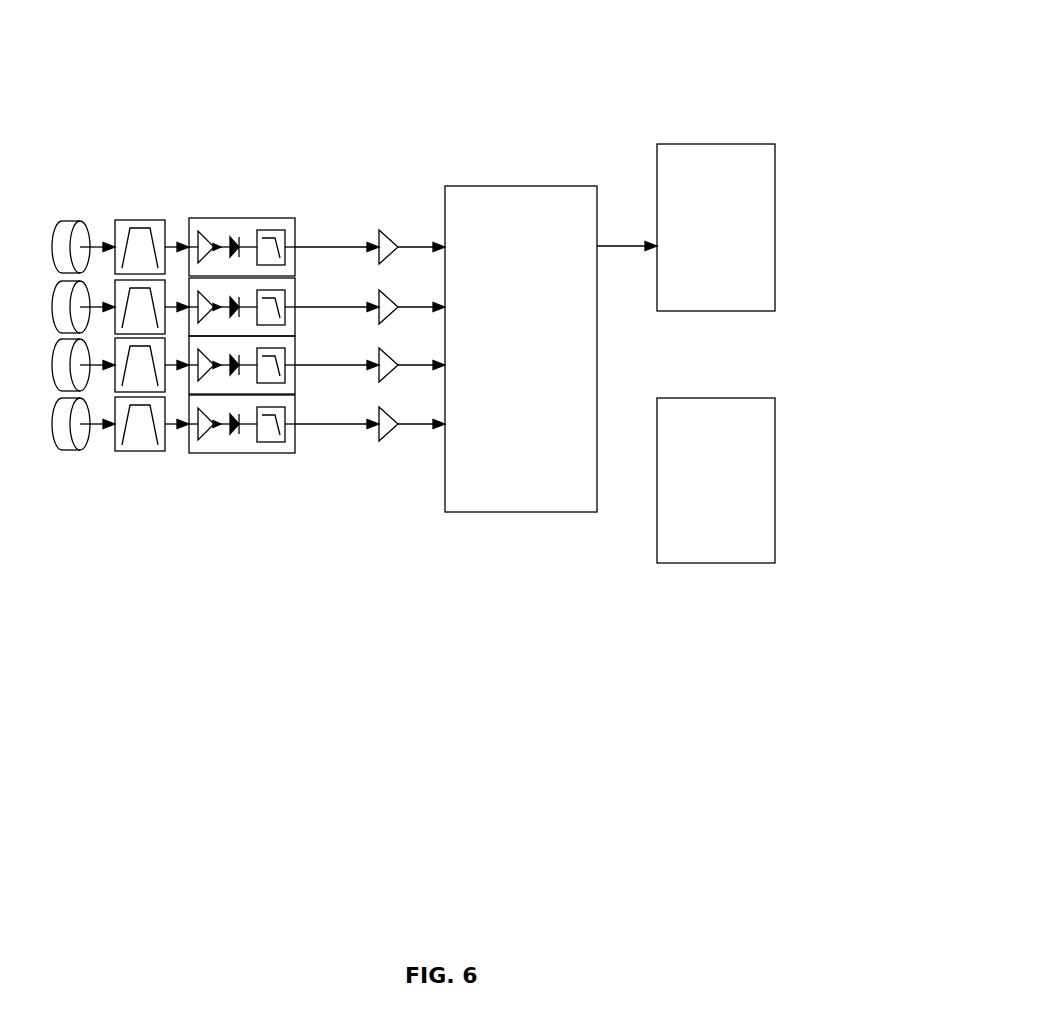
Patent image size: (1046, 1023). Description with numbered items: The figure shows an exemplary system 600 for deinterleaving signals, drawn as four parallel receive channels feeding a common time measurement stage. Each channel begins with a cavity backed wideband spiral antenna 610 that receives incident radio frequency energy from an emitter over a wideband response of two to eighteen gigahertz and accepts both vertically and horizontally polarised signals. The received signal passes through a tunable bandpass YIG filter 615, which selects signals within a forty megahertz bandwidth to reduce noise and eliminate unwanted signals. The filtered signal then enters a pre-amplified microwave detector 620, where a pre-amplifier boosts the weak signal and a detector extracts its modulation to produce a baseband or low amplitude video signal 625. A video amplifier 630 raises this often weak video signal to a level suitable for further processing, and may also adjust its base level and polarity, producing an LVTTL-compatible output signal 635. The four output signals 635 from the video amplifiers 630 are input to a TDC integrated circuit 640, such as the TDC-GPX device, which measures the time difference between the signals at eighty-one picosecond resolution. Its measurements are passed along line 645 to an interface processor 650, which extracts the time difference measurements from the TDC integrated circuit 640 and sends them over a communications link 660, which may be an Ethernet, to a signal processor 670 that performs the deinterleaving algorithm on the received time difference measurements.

The system for deinterleaving signals 600 is at (111, 91).
The cavity backed wideband spiral antenna 610 is at (67, 224).
The tunable bandpass YIG filter 615 is at (138, 221).
The pre-amplified microwave detector 620 is at (240, 222).
The video signal 625 is at (333, 243).
The video amplifier 630 is at (379, 230).
The output signal 635 is at (415, 245).
The TDC integrated circuit 640 is at (578, 197).
The data output line 645 is at (617, 245).
The interface processor 650 is at (754, 178).
The communications link 660 is at (712, 357).
The signal processor 670 is at (757, 434).